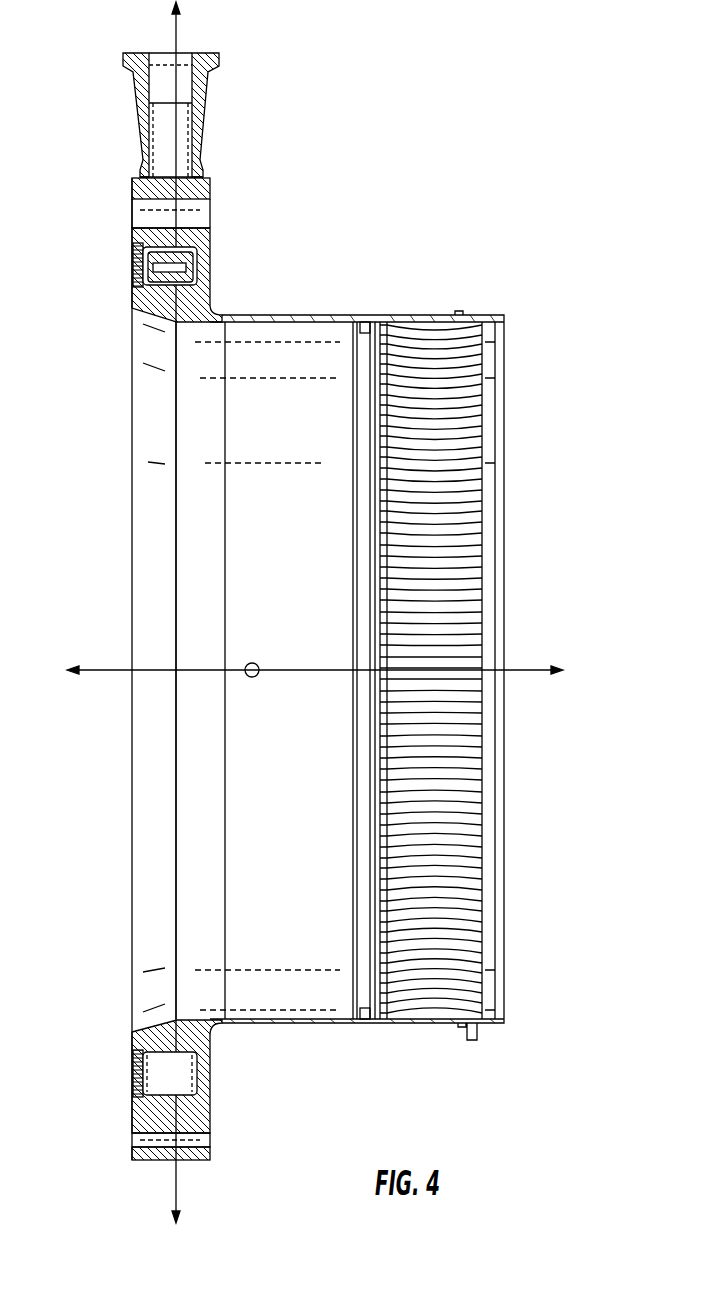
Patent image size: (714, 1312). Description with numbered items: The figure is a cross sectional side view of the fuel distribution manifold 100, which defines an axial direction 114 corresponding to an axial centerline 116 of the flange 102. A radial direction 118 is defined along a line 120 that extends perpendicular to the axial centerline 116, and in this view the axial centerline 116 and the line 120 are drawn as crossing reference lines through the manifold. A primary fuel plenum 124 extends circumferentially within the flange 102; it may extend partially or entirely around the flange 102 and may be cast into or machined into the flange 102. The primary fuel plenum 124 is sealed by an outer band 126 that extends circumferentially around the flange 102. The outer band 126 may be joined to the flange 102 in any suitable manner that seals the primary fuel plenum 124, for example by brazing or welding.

The fuel distribution manifold 100 is at (518, 75).
The flange 102 is at (169, 606).
The axial direction 114 is at (305, 670).
The axial centerline 116 is at (530, 673).
The radial direction 118 is at (176, 38).
The line 120 is at (177, 755).
The primary fuel plenum 124 is at (196, 264).
The outer band 126 is at (138, 272).